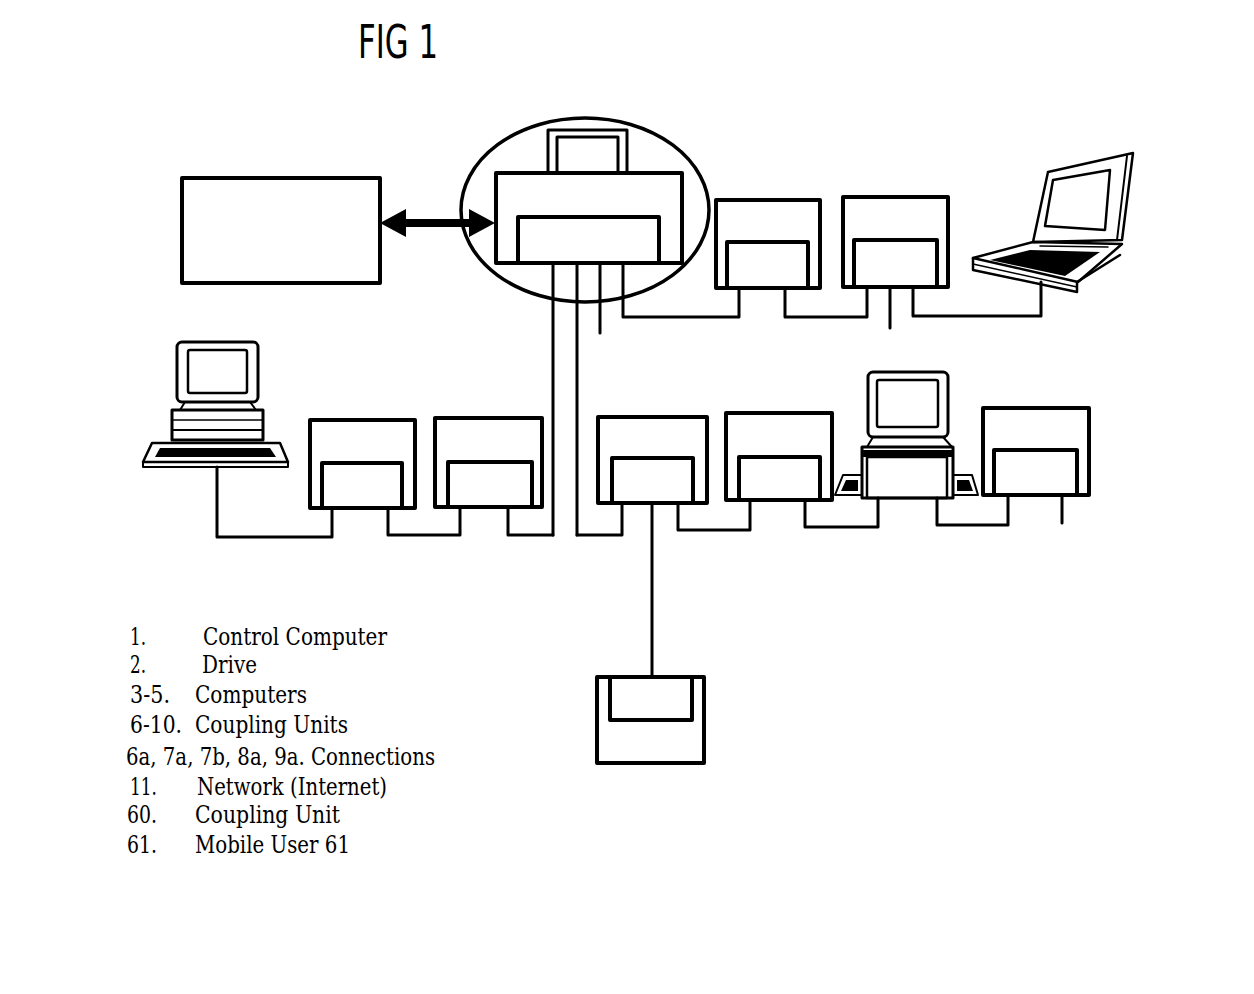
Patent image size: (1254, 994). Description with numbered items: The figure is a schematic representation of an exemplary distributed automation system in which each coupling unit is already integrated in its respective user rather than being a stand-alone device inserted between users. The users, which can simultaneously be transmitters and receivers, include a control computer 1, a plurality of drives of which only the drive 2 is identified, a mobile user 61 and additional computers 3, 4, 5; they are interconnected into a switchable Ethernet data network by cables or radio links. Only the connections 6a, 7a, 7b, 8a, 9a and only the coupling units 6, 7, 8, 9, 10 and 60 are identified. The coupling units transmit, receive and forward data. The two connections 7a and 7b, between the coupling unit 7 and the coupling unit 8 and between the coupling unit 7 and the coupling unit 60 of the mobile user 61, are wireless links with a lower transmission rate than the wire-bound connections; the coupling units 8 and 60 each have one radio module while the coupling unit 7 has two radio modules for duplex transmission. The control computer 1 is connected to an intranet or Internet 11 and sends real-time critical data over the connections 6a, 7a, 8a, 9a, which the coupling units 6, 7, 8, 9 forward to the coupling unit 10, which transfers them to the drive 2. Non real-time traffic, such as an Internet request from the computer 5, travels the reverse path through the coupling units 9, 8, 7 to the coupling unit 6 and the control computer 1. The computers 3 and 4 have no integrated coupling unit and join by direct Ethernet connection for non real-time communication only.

The control computer 1 is at (590, 221).
The drive 2 is at (879, 465).
The computer 3 is at (1138, 188).
The computer 4 is at (260, 367).
The computer 5 is at (917, 465).
The coupling unit 6 is at (535, 250).
The coupling unit 7 is at (640, 490).
The coupling unit 8 is at (772, 485).
The coupling unit 9 is at (908, 487).
The coupling unit 10 is at (1035, 482).
The connection 6a is at (577, 373).
The connection 7a is at (707, 532).
The connection 7b is at (652, 615).
The connection 8a is at (838, 527).
The connection 9a is at (967, 527).
The intranet/Internet 11 is at (257, 207).
The coupling unit 60 is at (673, 690).
The mobile user 61 is at (633, 694).